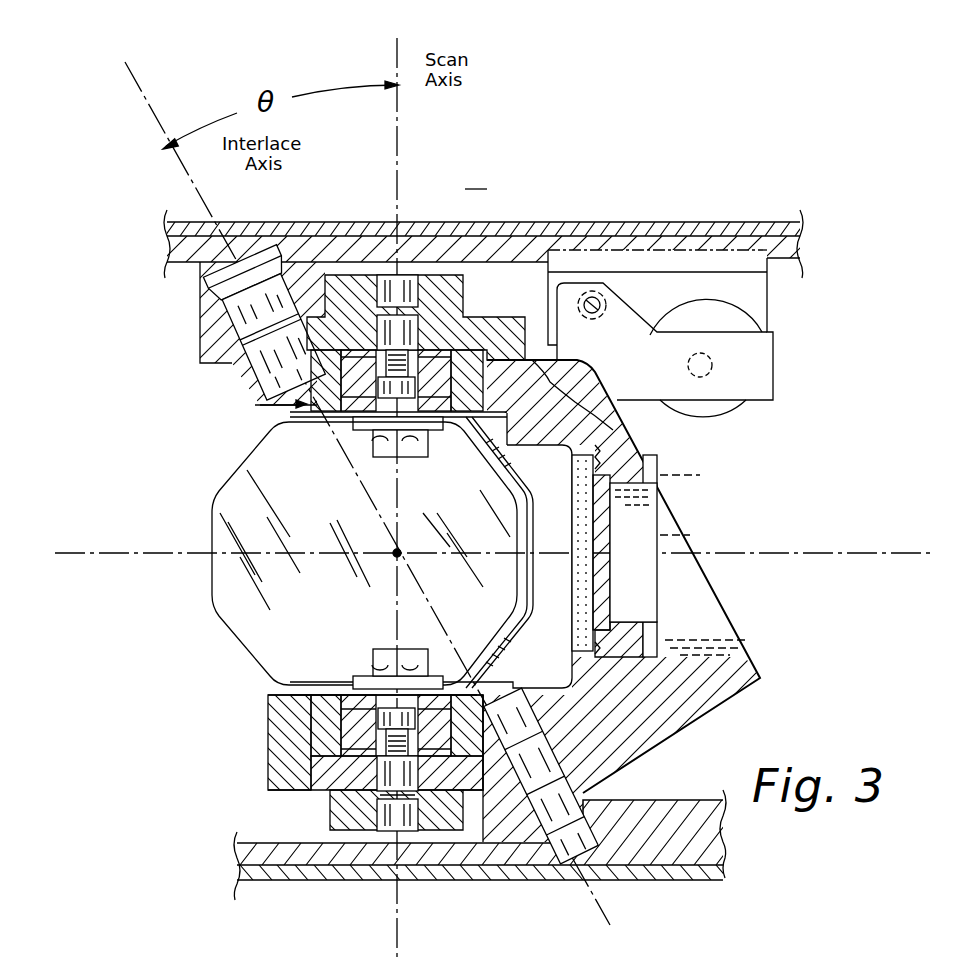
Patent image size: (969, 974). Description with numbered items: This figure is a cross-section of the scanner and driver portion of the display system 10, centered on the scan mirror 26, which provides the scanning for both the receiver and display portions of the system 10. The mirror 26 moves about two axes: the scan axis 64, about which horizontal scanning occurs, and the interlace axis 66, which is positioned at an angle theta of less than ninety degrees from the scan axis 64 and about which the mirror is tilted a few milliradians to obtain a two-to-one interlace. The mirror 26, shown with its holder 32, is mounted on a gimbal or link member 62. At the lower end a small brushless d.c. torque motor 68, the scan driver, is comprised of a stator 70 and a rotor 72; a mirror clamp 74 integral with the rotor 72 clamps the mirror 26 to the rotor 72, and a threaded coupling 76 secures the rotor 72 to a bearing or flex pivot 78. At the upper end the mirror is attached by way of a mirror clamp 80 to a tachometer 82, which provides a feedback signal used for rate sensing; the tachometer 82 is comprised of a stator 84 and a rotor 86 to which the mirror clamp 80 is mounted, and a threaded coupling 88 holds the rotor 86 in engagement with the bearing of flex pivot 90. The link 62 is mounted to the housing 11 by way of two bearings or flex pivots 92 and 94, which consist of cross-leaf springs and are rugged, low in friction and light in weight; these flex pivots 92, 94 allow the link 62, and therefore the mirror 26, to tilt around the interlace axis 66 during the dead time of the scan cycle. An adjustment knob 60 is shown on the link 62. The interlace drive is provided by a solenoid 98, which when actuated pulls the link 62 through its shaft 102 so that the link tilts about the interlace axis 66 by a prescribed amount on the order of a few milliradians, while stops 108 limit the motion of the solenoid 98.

The system 10 is at (476, 180).
The housing 11 is at (718, 222).
The scan mirror 26 is at (215, 605).
The mirror holder 32 is at (522, 627).
The adjustment knob 60 is at (651, 551).
The gimbal or link member 62 is at (700, 700).
The scan axis 64 is at (398, 150).
The interlace axis 66 is at (200, 204).
The torque motor 68 is at (310, 757).
The stator 70 is at (337, 693).
The rotor 72 is at (363, 700).
The mirror clamp 74 is at (382, 655).
The threaded coupling 76 is at (413, 720).
The bearing or flex pivot 78 is at (387, 823).
The mirror clamp 80 is at (410, 450).
The tachometer 82 is at (255, 405).
The stator 84 is at (323, 373).
The rotor 86 is at (347, 453).
The threaded coupling 88 is at (420, 360).
The flex pivot 90 is at (383, 272).
The flex pivot 92 is at (225, 303).
The flex pivot 94 is at (547, 853).
The solenoid 98 is at (740, 320).
The shaft 102 is at (705, 370).
The stops 108 is at (578, 306).